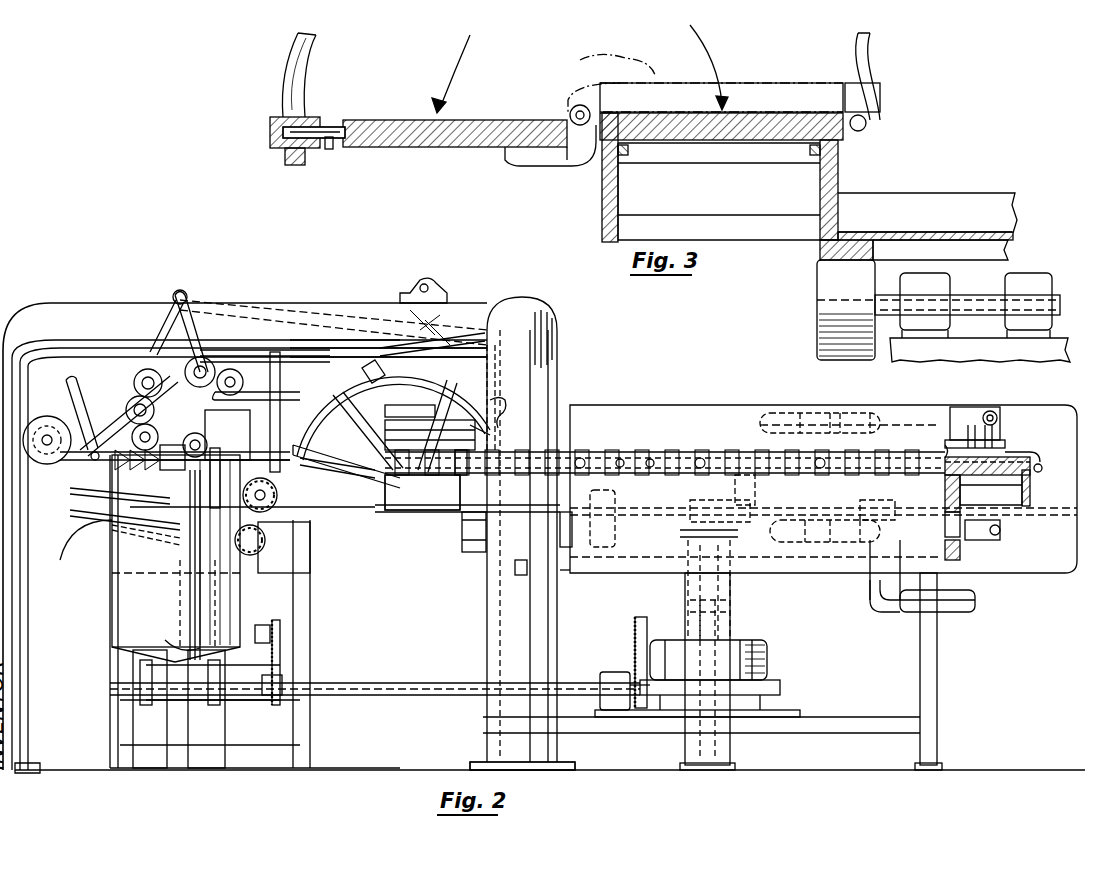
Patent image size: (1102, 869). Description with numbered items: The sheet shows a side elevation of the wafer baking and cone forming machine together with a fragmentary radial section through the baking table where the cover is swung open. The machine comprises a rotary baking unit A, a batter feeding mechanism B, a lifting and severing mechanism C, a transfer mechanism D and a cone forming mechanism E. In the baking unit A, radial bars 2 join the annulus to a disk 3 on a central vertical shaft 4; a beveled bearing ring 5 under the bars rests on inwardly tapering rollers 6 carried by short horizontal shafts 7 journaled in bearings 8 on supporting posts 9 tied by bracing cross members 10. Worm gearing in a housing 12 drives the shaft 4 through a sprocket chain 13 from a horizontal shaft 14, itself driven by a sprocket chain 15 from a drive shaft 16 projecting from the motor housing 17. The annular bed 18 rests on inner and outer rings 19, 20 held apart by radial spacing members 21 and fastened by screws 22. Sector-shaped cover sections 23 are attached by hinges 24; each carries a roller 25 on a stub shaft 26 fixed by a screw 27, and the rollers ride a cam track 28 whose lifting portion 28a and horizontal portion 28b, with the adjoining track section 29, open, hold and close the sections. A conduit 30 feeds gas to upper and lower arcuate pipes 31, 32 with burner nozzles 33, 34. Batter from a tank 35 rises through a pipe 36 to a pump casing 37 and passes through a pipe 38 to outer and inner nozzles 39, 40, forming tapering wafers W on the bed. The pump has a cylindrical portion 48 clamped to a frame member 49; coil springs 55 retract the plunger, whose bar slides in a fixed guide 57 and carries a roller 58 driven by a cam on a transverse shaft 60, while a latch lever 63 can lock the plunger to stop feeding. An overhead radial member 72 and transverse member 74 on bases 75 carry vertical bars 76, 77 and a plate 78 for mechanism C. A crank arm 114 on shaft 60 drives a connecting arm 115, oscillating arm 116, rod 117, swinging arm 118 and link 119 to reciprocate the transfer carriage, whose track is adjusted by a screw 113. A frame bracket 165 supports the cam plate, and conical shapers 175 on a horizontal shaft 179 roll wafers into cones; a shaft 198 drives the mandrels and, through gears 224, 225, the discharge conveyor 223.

In FIG. 3, the radial bars 2 is at (975, 202).
In FIG. 2, the disk 3 is at (672, 522).
In FIG. 2, the central vertical shaft 4 is at (733, 590).
In FIG. 3, the beveled bearing ring 5 is at (830, 257).
In FIG. 2, the beveled bearing ring 5 is at (945, 500).
In FIG. 3, the inwardly tapering rollers 6 is at (818, 336).
In FIG. 2, the inwardly tapering rollers 6 is at (462, 560).
In FIG. 3, the short horizontal shafts 7 is at (1060, 320).
In FIG. 2, the short horizontal shafts 7 is at (522, 575).
In FIG. 3, the bearings 8 is at (942, 283).
In FIG. 2, the bearings 8 is at (565, 525).
In FIG. 2, the supporting posts 9 is at (485, 612).
In FIG. 2, the bracing cross members 10 is at (563, 576).
In FIG. 2, the housing 12 is at (748, 641).
In FIG. 2, the sprocket chain 13 is at (635, 635).
In FIG. 2, the horizontal shaft 14 is at (400, 684).
In FIG. 2, the sprocket chain 15 is at (283, 668).
In FIG. 2, the drive shaft 16 is at (272, 630).
In FIG. 2, the motor housing 17 is at (283, 660).
In FIG. 3, the annular bed 18 is at (846, 133).
In FIG. 2, the annular bed 18 is at (692, 478).
In FIG. 3, the inner ring 19 is at (840, 172).
In FIG. 2, the inner ring 19 is at (942, 470).
In FIG. 3, the outer ring 20 is at (600, 200).
In FIG. 2, the outer ring 20 is at (1031, 502).
In FIG. 3, the radial spacing members 21 is at (748, 207).
In FIG. 2, the radial spacing members 21 is at (1015, 503).
In FIG. 3, the screws 22 is at (628, 152).
In FIG. 3, the sector-shaped cover sections 23 is at (458, 142).
In FIG. 2, the sector-shaped cover sections 23 is at (345, 488).
In FIG. 3, the hinges 24 is at (568, 110).
In FIG. 2, the hinges 24 is at (647, 456).
In FIG. 3, the roller 25 is at (273, 118).
In FIG. 3, the stub shaft 26 is at (338, 118).
In FIG. 3, the screw 27 is at (333, 150).
In FIG. 2, the cam track 28 is at (486, 410).
In FIG. 3, the lifting portion 28a is at (876, 125).
In FIG. 3, the central arcuate portion 28b is at (285, 160).
In FIG. 2, the adjoining track section 29 is at (362, 348).
In FIG. 2, the conduit 30 is at (960, 614).
In FIG. 2, the upper arcuate pipe 31 is at (975, 412).
In FIG. 2, the lower arcuate pipe 32 is at (972, 540).
In FIG. 2, the upper burner nozzles 33 is at (812, 440).
In FIG. 2, the bottom burner nozzles 34 is at (806, 520).
In FIG. 2, the batter tank 35 is at (125, 602).
In FIG. 2, the pipe 36 is at (210, 600).
In FIG. 2, the pump casing 37 is at (208, 470).
In FIG. 2, the pipe 38 is at (360, 378).
In FIG. 2, the outer delivery nozzle 39 is at (467, 493).
In FIG. 2, the inner delivery nozzle 40 is at (470, 375).
In FIG. 2, the cylindrical portion 48 is at (162, 468).
In FIG. 2, the fixed frame member 49 is at (96, 462).
In FIG. 2, the coil springs 55 is at (112, 512).
In FIG. 2, the fixed guide 57 is at (106, 440).
In FIG. 2, the roller 58 is at (80, 492).
In FIG. 2, the transverse shaft 60 is at (48, 446).
In FIG. 2, the latch lever 63 is at (68, 384).
In FIG. 2, the radially extending member 72 is at (58, 304).
In FIG. 2, the transverse member 74 is at (555, 330).
In FIG. 2, the bases 75 is at (480, 764).
In FIG. 2, the vertical bar 76 is at (507, 370).
In FIG. 2, the vertical bar 77 is at (296, 348).
In FIG. 2, the radially extending plate 78 is at (405, 404).
In FIG. 2, the manually operable screw 113 is at (348, 456).
In FIG. 2, the crank arm 114 is at (60, 436).
In FIG. 2, the connecting arm 115 is at (150, 325).
In FIG. 2, the oscillating arm 116 is at (207, 300).
In FIG. 2, the rod 117 is at (293, 300).
In FIG. 2, the swinging arm 118 is at (432, 305).
In FIG. 2, the link 119 is at (505, 425).
In FIG. 2, the frame bracket 165 is at (232, 396).
In FIG. 2, the conical shapers 175 is at (160, 375).
In FIG. 2, the horizontal shaft 179 is at (190, 430).
In FIG. 2, the shaft 198 is at (276, 506).
In FIG. 2, the endless belt discharge conveyor 223 is at (110, 528).
In FIG. 2, the gear 224 is at (271, 540).
In FIG. 2, the gear 225 is at (252, 516).
In FIG. 3, the wafer strip baking unit A is at (750, 113).
In FIG. 2, the wafer strip baking unit A is at (1005, 452).
In FIG. 2, the batter feeding mechanism B is at (292, 398).
In FIG. 2, the wafer strip lifting and severing mechanism C is at (398, 426).
In FIG. 2, the transfer mechanism D is at (420, 365).
In FIG. 2, the cone forming mechanism E is at (238, 370).
In FIG. 2, the wafer W is at (950, 460).